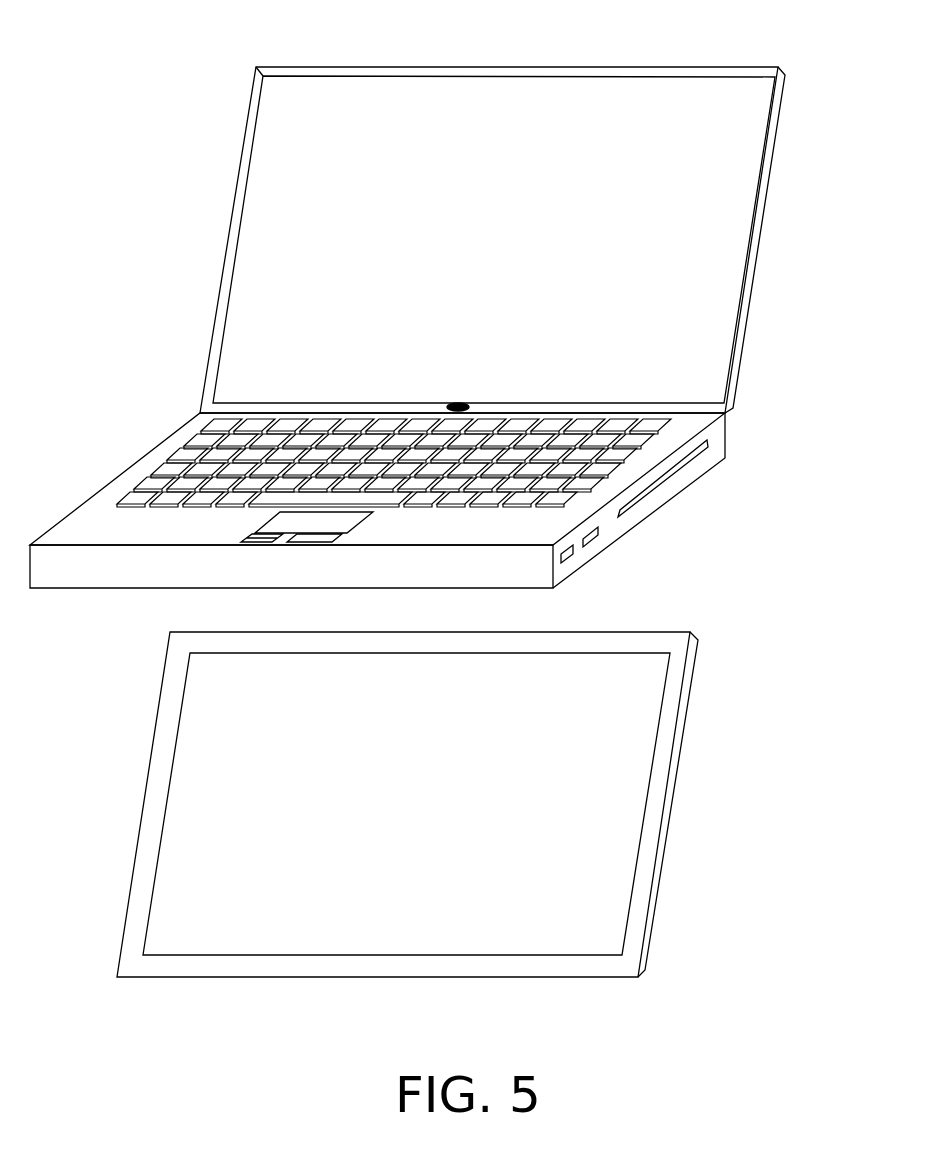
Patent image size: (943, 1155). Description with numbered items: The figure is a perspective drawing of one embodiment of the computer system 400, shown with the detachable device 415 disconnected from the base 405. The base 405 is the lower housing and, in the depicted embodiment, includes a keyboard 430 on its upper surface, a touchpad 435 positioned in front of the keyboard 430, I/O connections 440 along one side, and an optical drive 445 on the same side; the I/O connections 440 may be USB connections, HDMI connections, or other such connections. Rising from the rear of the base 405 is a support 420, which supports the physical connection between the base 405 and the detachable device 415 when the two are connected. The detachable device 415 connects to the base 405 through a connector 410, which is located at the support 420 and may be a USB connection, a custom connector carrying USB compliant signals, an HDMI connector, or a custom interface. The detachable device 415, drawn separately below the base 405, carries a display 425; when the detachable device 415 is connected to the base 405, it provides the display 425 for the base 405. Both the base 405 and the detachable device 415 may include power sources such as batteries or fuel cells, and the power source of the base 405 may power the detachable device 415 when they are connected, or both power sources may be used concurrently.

The computer system 400 is at (100, 60).
The base 405 is at (128, 480).
The connector 410 is at (450, 404).
The detachable device 415 is at (163, 746).
The support 420 is at (275, 222).
The display 425 is at (182, 828).
The keyboard 430 is at (210, 440).
The touchpad 435 is at (255, 547).
The I/O connections 440 is at (590, 538).
The optical drive 445 is at (708, 444).